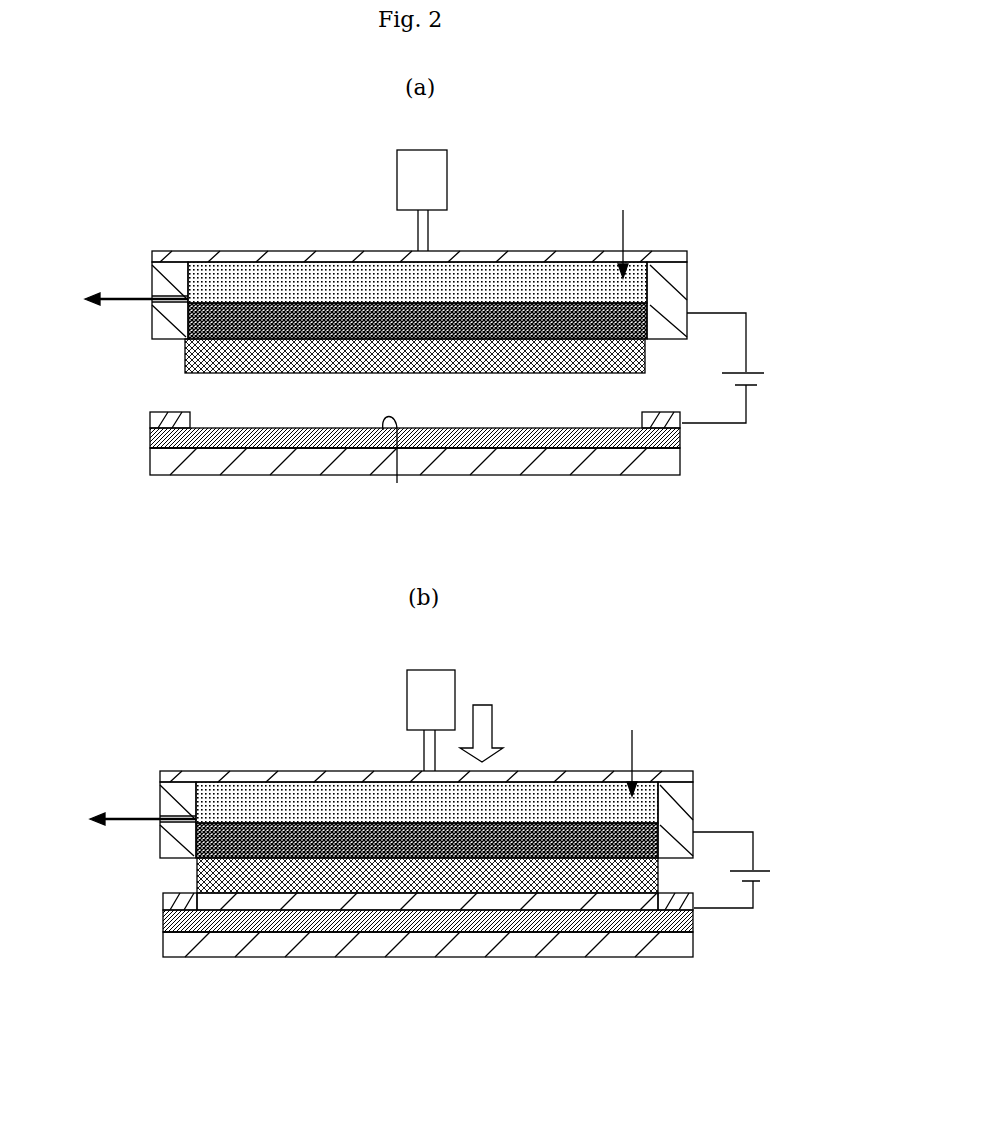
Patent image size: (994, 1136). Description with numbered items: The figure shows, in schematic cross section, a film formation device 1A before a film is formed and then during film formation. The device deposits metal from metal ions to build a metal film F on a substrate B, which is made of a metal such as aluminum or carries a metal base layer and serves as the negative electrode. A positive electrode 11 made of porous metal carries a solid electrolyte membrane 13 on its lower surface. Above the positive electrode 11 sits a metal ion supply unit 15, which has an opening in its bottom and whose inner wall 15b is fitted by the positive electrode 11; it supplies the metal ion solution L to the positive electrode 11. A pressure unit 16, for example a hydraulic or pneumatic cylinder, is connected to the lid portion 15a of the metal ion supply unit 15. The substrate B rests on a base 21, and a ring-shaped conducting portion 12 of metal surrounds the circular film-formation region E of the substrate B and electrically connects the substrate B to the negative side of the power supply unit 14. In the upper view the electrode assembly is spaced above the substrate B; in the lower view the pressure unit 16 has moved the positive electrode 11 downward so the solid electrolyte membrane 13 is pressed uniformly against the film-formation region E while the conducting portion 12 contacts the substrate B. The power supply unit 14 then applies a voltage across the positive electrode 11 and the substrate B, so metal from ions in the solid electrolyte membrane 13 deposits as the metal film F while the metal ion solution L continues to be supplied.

The film formation device 1A is at (190, 160).
The metal ion supply unit 15 is at (158, 272).
The lid portion 15a is at (498, 257).
The inner wall 15b is at (206, 298).
The metal ion solution L is at (267, 274).
The positive electrode 11 is at (158, 328).
The solid electrolyte membrane 13 is at (160, 352).
The conducting portion 12 is at (150, 423).
The base 21 is at (258, 470).
The substrate B is at (302, 448).
The film formation region E is at (391, 467).
The metal film F is at (287, 900).
The pressure unit 16 is at (397, 180).
The power supply unit 14 is at (756, 376).